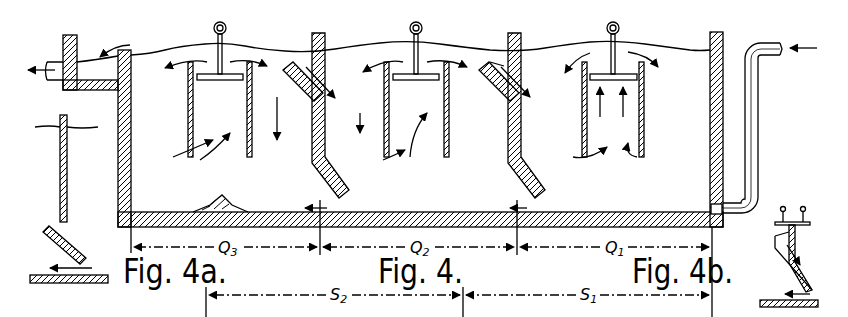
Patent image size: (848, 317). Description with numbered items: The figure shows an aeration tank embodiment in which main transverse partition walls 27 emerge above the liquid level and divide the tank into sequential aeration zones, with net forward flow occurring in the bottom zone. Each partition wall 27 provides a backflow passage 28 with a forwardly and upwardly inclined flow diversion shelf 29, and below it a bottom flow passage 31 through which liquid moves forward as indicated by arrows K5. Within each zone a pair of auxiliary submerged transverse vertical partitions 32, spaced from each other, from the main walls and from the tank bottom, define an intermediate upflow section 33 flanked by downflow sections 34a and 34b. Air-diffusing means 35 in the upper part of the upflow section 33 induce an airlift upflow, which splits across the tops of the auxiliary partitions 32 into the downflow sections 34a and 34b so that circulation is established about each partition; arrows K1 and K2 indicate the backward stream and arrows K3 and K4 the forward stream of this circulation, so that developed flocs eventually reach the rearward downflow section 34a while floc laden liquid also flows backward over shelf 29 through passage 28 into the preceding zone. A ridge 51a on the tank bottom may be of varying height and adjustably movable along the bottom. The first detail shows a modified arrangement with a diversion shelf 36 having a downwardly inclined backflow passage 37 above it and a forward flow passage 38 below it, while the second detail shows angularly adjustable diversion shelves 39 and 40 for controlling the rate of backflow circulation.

In FIG. 4, the main transverse partition wall 27 is at (522, 46).
In FIG. 4, the backflow passage 28 is at (497, 63).
In FIG. 4, the flow diversion shelf 29 is at (483, 67).
In FIG. 4, the bottom flow passage 31 is at (342, 201).
In FIG. 4, the auxiliary submerged transverse vertical partition 32 is at (581, 96).
In FIG. 4, the intermediate upflow section 33 is at (622, 137).
In FIG. 4, the downflow section 34a is at (700, 157).
In FIG. 4, the downflow section 34b is at (563, 157).
In FIG. 4, the air-diffusing means 35 is at (619, 72).
In FIG. 4A, the diversion shelf 36 is at (84, 256).
In FIG. 4A, the backflow passage 37 is at (80, 240).
In FIG. 4A, the flow passage 38 is at (67, 260).
In FIG. 4B, the angularly adjustable diversion shelf 39 is at (776, 254).
In FIG. 4B, the angularly adjustable diversion shelf 40 is at (795, 285).
In FIG. 4, the ridge 51a is at (235, 205).
In FIG. 4, the backward stream arrow K1 is at (653, 46).
In FIG. 4, the backward stream arrow K2 is at (643, 160).
In FIG. 4, the forward stream arrow K3 is at (583, 50).
In FIG. 4, the forward stream arrow K4 is at (583, 160).
In FIG. 4, the forward bottom flow arrow K5 is at (370, 205).